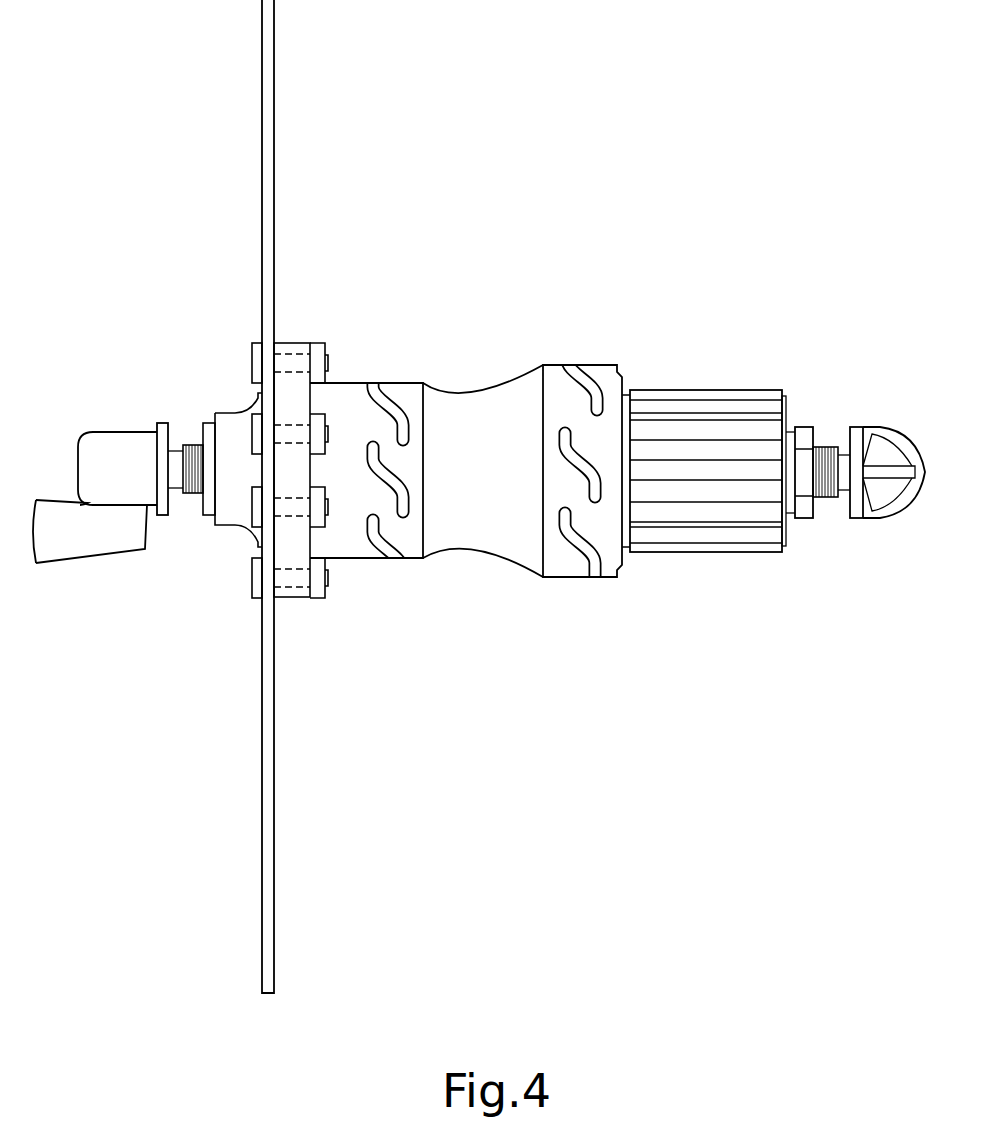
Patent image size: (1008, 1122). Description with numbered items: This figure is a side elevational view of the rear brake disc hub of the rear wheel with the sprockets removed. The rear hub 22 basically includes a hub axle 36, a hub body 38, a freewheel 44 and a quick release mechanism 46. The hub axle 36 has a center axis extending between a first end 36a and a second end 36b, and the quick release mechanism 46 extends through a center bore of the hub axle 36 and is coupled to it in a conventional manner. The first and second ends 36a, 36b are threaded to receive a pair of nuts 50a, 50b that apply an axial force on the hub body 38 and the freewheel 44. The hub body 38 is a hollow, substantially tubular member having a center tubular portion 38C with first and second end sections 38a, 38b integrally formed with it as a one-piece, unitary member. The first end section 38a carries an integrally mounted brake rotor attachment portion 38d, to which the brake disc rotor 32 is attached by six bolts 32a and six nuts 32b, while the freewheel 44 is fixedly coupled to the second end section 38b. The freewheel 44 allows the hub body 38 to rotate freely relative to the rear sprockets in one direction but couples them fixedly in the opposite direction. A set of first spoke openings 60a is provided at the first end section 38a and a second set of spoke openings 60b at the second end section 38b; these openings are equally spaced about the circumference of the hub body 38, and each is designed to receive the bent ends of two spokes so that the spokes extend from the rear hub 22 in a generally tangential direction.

The rear hub 22 is at (601, 320).
The brake disc rotor 32 is at (276, 120).
The bolts 32a is at (250, 420).
The nuts 32b is at (313, 412).
The hub axle 36 is at (510, 478).
The first end 36a is at (193, 495).
The second end 36b is at (833, 497).
The hub body 38 is at (436, 430).
The first end section 38a is at (403, 559).
The second end section 38b is at (600, 578).
The center tubular portion 38C is at (513, 550).
The brake rotor attachment portion 38d is at (293, 342).
The freewheel 44 is at (718, 388).
The quick release mechanism 46 is at (92, 430).
The nut 50a is at (218, 423).
The nut 50b is at (803, 426).
The first spoke openings 60a is at (407, 496).
The second spoke openings 60b is at (591, 452).